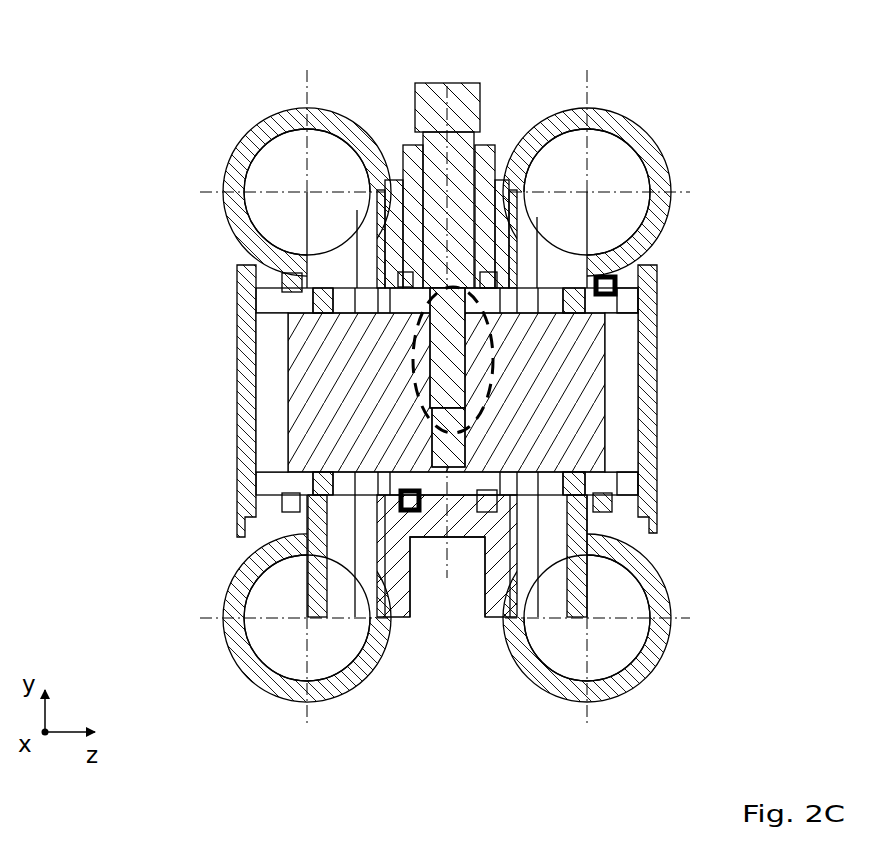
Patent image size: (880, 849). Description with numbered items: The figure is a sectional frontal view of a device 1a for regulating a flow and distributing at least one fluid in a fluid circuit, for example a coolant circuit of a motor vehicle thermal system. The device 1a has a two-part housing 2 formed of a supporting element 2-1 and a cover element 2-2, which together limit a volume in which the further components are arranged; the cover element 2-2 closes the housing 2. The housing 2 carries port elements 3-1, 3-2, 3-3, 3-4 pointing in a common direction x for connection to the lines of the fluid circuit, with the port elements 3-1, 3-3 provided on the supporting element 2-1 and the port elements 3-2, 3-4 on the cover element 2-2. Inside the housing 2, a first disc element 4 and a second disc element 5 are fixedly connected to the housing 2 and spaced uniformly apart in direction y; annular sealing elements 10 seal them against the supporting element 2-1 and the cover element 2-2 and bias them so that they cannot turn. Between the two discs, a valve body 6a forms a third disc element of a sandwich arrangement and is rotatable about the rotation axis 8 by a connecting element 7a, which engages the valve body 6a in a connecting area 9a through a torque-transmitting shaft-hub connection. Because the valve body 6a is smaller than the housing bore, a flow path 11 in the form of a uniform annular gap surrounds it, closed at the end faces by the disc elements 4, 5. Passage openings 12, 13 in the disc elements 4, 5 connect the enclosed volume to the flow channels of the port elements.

The device 1a is at (544, 150).
The housing 2 is at (250, 106).
The supporting element 2-1 is at (247, 322).
The cover element 2-2 is at (347, 685).
The port element 3-1 is at (265, 180).
The port element 3-2 is at (279, 645).
The port element 3-3 is at (630, 178).
The port element 3-4 is at (617, 643).
The first disc element 4 is at (627, 300).
The second disc element 5 is at (627, 484).
The valve body 6a is at (577, 437).
The connecting element 7a is at (467, 100).
The rotation axis 8 is at (450, 553).
The connecting area 9a is at (493, 358).
The sealing elements 10 is at (398, 281).
The flow path 11 is at (270, 375).
The passage opening 12 is at (358, 305).
The passage opening 13 is at (527, 488).